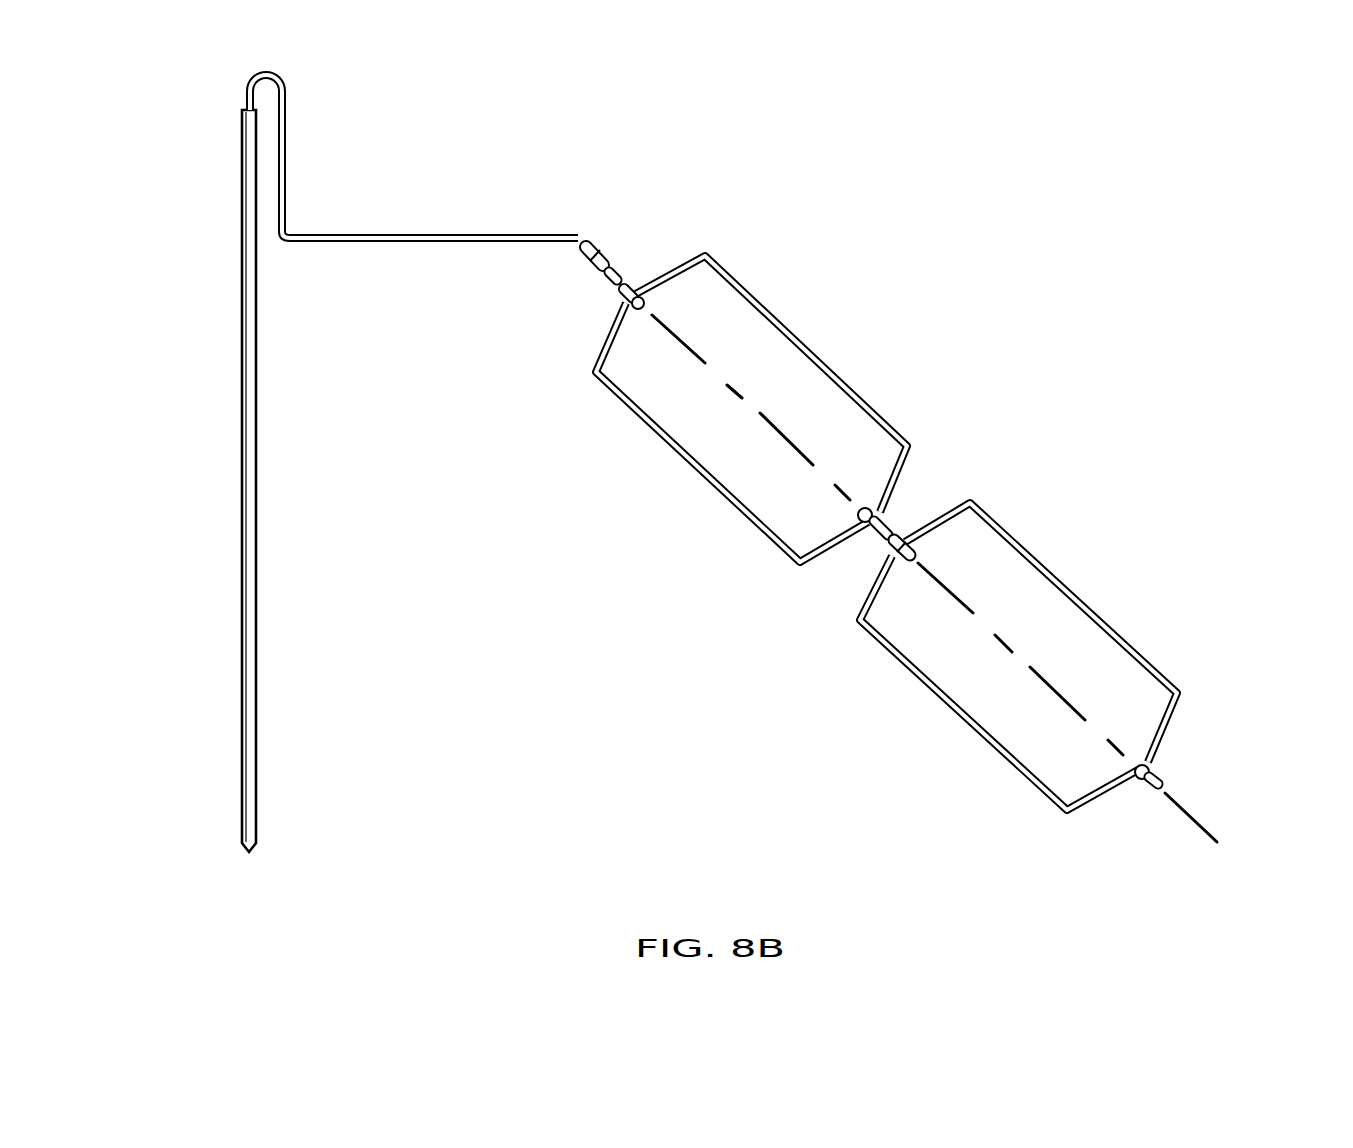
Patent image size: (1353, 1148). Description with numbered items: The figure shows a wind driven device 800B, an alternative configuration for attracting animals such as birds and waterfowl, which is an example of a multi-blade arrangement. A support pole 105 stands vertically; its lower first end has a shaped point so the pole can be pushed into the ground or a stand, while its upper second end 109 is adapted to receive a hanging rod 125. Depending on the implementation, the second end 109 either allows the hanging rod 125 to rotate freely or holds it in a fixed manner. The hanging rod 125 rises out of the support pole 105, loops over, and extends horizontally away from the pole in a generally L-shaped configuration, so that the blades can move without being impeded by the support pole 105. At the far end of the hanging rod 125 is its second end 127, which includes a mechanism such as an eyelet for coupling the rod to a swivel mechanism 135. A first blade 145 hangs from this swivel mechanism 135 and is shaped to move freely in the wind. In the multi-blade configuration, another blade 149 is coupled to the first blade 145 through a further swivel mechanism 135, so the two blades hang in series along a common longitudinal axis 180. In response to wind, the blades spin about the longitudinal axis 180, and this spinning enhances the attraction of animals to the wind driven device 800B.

The support pole 105 is at (240, 600).
The second end 109 is at (245, 112).
The hanging rod 125 is at (345, 234).
The second end 127 is at (592, 243).
The swivel mechanism 135 is at (618, 268).
The blade 145 is at (790, 327).
The blade 149 is at (1027, 549).
The longitudinal axis 180 is at (780, 437).
The wind driven device 800B is at (1183, 261).